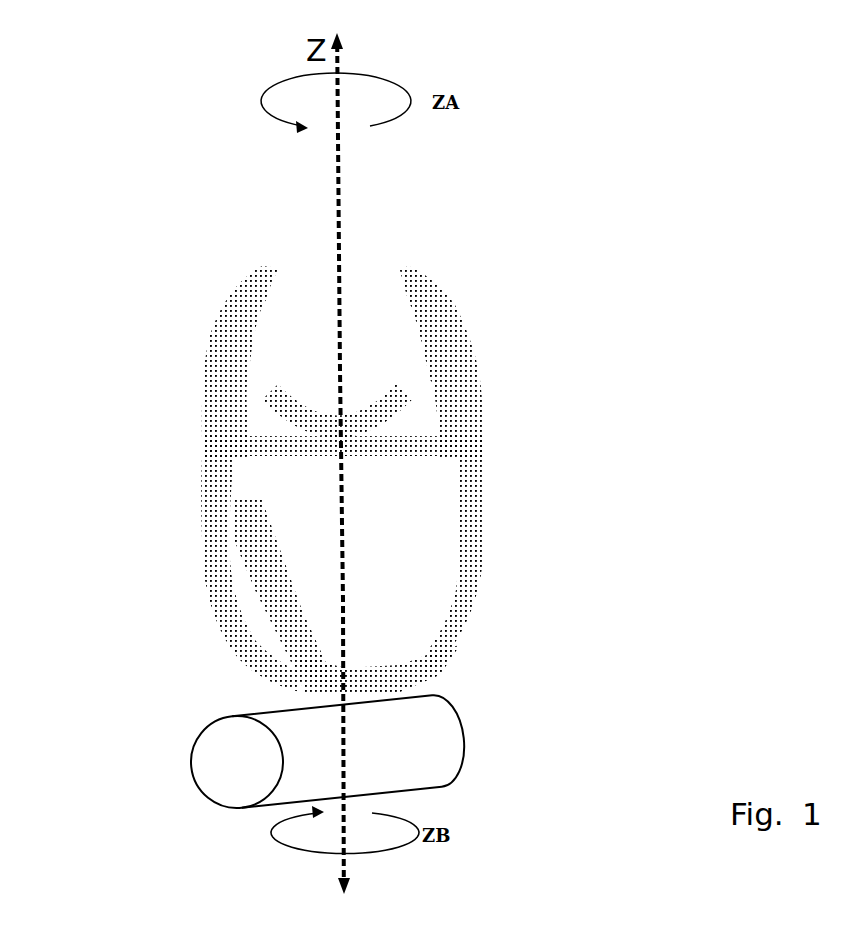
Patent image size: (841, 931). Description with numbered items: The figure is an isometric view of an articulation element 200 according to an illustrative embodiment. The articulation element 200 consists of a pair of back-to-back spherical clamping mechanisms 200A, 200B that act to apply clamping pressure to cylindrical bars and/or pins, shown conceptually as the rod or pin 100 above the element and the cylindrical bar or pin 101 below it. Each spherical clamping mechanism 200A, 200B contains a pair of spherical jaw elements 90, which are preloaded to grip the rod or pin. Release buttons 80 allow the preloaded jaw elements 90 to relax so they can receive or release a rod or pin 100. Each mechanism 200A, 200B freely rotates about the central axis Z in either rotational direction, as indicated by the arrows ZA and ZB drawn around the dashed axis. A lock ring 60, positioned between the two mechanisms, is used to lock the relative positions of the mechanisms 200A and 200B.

The lock ring 60 is at (190, 483).
The release button 80 is at (191, 352).
The spherical jaw element 90 is at (296, 300).
The rod or pin 100 is at (361, 195).
The cylindrical bar or pin 101 is at (426, 746).
The articulation element 200 is at (530, 250).
The spherical clamping mechanism 200A is at (430, 413).
The spherical clamping mechanism 200B is at (415, 662).